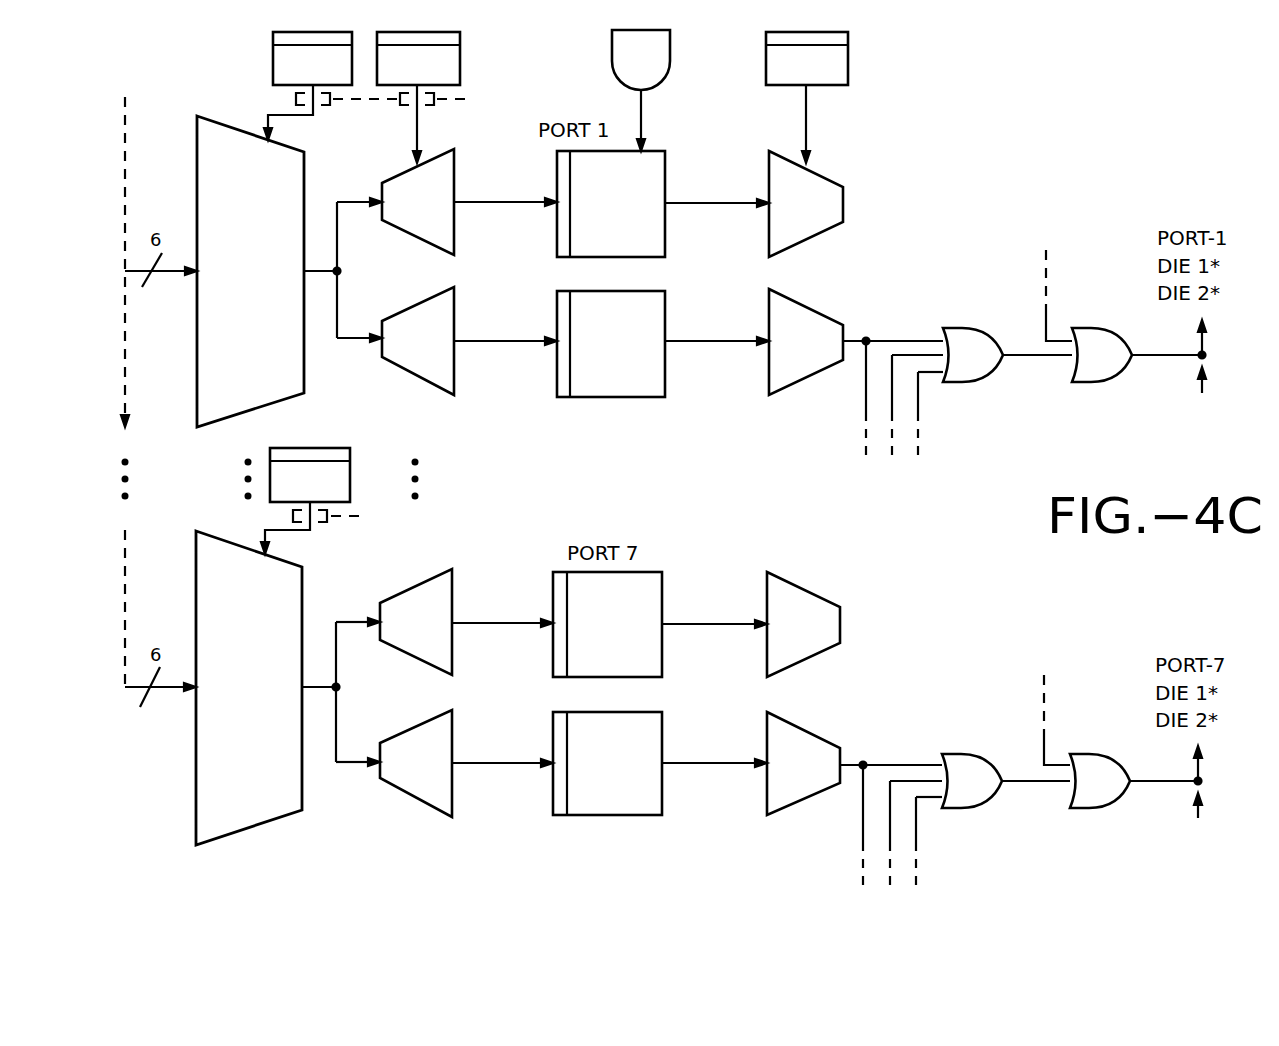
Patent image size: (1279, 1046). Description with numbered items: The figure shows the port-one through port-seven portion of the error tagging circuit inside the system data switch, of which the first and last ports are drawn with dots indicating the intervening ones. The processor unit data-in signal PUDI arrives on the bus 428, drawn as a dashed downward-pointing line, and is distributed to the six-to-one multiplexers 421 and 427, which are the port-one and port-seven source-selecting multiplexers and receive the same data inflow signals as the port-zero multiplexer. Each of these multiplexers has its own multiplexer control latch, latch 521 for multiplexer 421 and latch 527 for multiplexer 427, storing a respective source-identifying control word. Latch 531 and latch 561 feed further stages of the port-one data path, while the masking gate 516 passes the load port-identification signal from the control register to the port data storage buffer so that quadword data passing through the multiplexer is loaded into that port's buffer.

The bus 428 is at (150, 149).
The port-1 source-selecting multiplexer 421 is at (250, 271).
The port-7 source-selecting multiplexer 427 is at (249, 688).
The multiplexer control latch 521 is at (331, 86).
The enable register 531 is at (423, 97).
The output enable register 561 is at (807, 97).
The multiplexer control latch 527 is at (313, 501).
The masking gate 516 is at (656, 58).